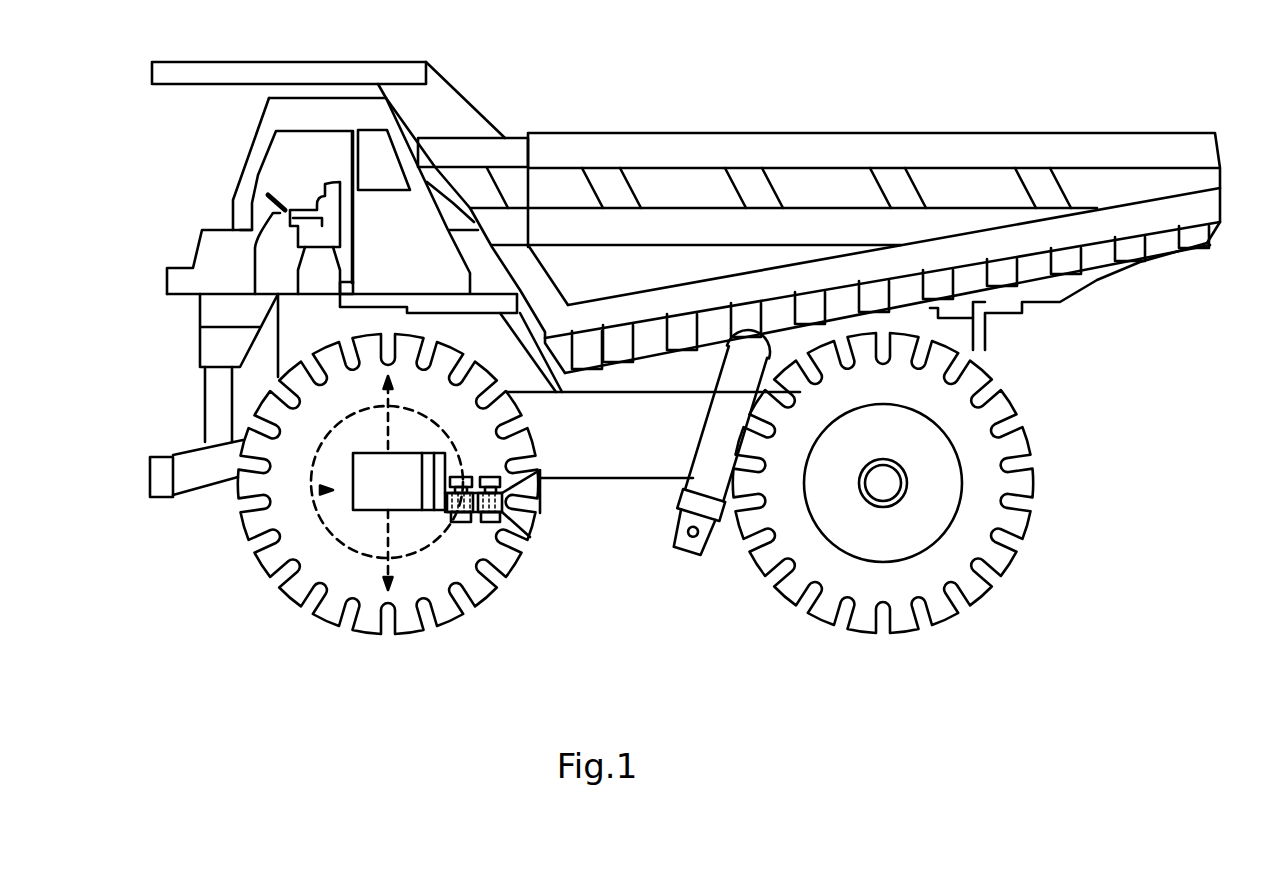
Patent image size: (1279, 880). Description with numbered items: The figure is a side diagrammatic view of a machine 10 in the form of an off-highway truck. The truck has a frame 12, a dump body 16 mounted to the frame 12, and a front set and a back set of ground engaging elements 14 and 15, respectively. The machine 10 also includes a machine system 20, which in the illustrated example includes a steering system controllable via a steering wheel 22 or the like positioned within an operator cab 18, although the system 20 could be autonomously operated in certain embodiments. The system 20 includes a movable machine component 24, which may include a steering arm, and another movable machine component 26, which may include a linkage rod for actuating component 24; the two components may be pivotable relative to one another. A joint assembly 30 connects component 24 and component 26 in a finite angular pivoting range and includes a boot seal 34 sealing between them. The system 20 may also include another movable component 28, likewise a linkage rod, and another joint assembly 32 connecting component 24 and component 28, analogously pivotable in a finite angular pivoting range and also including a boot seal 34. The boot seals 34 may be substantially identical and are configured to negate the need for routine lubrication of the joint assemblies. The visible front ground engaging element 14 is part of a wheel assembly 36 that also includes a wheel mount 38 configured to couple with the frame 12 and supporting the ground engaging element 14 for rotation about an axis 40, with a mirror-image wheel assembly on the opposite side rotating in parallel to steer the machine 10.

The machine 10 is at (101, 128).
The frame 12 is at (638, 480).
The front ground engaging element 14 is at (481, 593).
The back ground engaging element 15 is at (976, 594).
The dump body 16 is at (1222, 148).
The operator cab 18 is at (249, 155).
The machine system 20 is at (418, 432).
The steering wheel 22 is at (285, 199).
The movable machine component 24 is at (530, 528).
The movable machine component 26 is at (461, 477).
The movable component 28 is at (490, 477).
The joint assembly 30 is at (452, 501).
The joint assembly 32 is at (480, 504).
The boot seal 34 is at (446, 492).
The wheel assembly 36 is at (325, 491).
The wheel mount 38 is at (368, 512).
The axis 40 is at (388, 393).